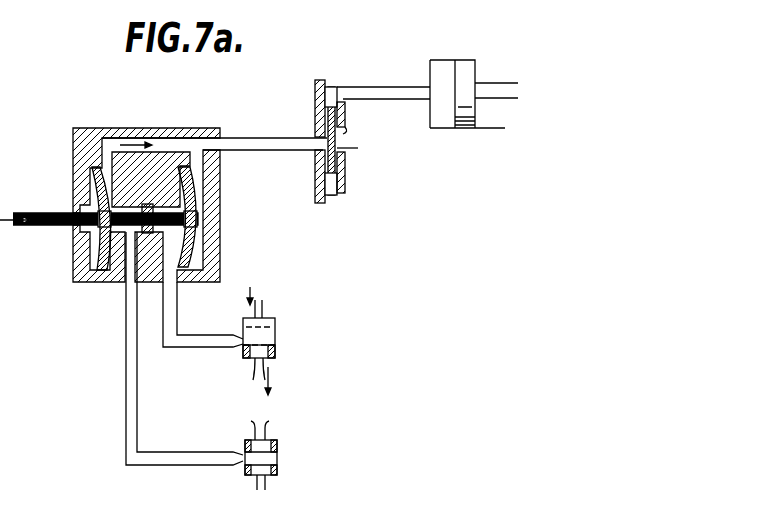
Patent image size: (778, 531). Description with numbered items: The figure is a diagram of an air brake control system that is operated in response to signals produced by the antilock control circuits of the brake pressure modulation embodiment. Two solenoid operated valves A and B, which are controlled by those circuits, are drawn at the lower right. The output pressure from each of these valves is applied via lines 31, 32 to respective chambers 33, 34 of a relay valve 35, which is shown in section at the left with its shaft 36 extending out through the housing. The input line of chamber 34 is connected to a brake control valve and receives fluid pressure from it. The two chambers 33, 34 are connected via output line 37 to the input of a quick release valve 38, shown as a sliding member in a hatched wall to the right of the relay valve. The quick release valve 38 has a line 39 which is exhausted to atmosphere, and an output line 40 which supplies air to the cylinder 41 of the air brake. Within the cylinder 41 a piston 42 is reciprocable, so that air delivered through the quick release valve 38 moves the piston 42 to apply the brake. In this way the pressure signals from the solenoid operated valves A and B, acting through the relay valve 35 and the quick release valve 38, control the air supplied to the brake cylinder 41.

The line 31 is at (202, 335).
The line 32 is at (185, 452).
The chamber 33 is at (205, 238).
The chamber 34 is at (88, 253).
The relay valve 35 is at (187, 133).
The shaft 36 is at (50, 213).
The output line 37 is at (266, 138).
The quick release valve 38 is at (345, 167).
The line 39 is at (355, 132).
The output line 40 is at (382, 87).
The cylinder 41 is at (445, 60).
The piston 42 is at (468, 87).
The solenoid operated valve A is at (275, 338).
The solenoid operated valve B is at (277, 458).